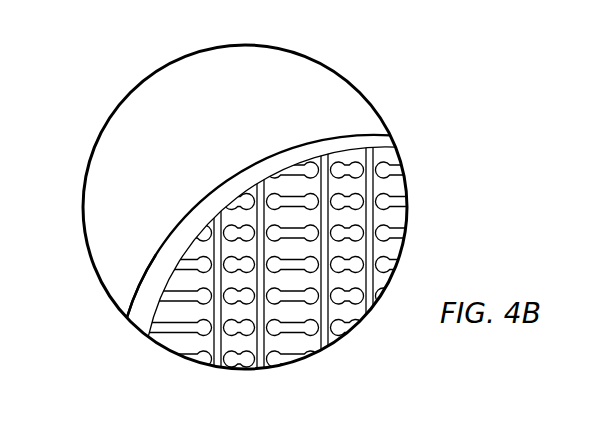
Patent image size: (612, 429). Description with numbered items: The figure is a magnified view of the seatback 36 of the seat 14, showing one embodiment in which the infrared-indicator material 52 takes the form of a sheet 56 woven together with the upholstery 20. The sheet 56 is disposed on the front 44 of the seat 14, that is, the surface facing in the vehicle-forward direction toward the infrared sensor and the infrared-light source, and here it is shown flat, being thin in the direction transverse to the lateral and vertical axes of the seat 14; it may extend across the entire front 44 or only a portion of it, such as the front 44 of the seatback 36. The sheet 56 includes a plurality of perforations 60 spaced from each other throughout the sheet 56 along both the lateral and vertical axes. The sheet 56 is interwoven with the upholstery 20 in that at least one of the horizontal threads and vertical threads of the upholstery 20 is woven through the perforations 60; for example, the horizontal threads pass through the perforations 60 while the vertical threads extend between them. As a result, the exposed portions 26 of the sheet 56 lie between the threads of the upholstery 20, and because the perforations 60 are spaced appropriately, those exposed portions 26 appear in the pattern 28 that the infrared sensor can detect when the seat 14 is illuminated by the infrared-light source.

The seat 14 is at (249, 236).
The upholstery 20 is at (228, 218).
The exposed portions 26 is at (354, 216).
The pattern 28 is at (297, 187).
The seatback 36 is at (162, 255).
The front 44 is at (138, 290).
The infrared-indicator material 52 is at (260, 364).
The sheet 56 is at (290, 342).
The perforations 60 is at (316, 224).